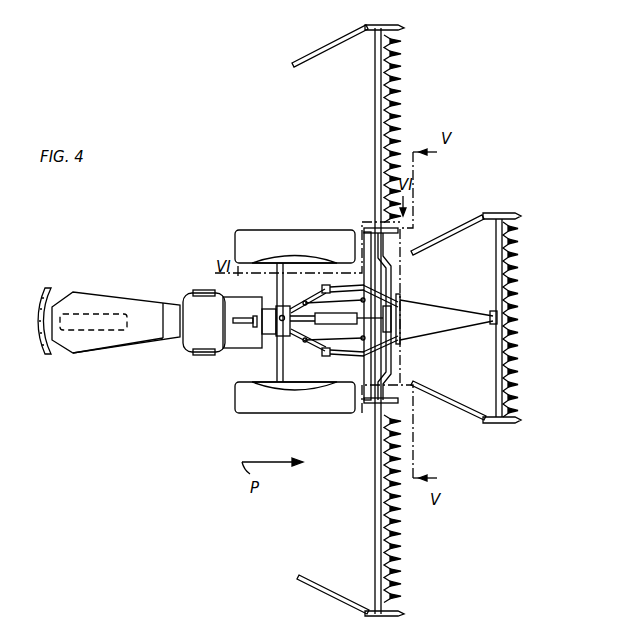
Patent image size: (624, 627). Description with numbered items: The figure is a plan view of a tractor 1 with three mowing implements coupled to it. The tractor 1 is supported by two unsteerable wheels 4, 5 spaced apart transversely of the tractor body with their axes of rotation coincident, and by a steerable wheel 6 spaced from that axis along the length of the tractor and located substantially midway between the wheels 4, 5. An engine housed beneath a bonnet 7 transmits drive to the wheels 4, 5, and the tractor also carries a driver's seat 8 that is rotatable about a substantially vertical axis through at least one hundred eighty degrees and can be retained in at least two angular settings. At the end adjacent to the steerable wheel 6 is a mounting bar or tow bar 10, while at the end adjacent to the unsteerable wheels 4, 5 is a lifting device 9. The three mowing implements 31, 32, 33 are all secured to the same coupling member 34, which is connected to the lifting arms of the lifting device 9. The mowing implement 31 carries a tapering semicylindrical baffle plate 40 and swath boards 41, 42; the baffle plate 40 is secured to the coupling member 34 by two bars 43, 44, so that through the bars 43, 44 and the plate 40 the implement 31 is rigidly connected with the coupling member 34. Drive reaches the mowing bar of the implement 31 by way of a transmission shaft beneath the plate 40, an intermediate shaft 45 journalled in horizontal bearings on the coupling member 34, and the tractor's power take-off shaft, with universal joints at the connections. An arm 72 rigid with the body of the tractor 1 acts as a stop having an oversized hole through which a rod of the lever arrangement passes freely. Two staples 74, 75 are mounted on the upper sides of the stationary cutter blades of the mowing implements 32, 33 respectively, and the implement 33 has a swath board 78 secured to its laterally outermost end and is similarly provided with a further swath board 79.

The tractor 1 is at (90, 293).
The unsteerable wheel 4 is at (247, 397).
The unsteerable wheel 5 is at (253, 240).
The steerable wheel 6 is at (88, 324).
The bonnet 7 is at (132, 338).
The driver's seat 8 is at (207, 291).
The lifting device 9 is at (309, 353).
The mounting bar or tow bar 10 is at (40, 328).
The mowing implement 31 is at (513, 402).
The mowing implement 32 is at (373, 92).
The mowing implement 33 is at (372, 552).
The coupling member 34 is at (364, 348).
The baffle plate 40 is at (457, 323).
The swath board 41 is at (447, 405).
The swath board 42 is at (446, 237).
The bar 43 is at (397, 301).
The bar 44 is at (400, 337).
The intermediate shaft 45 is at (396, 318).
The arm 72 is at (362, 290).
The staple 74 is at (380, 167).
The staple 75 is at (380, 470).
The swath board 78 is at (315, 55).
The swath board 79 is at (298, 578).